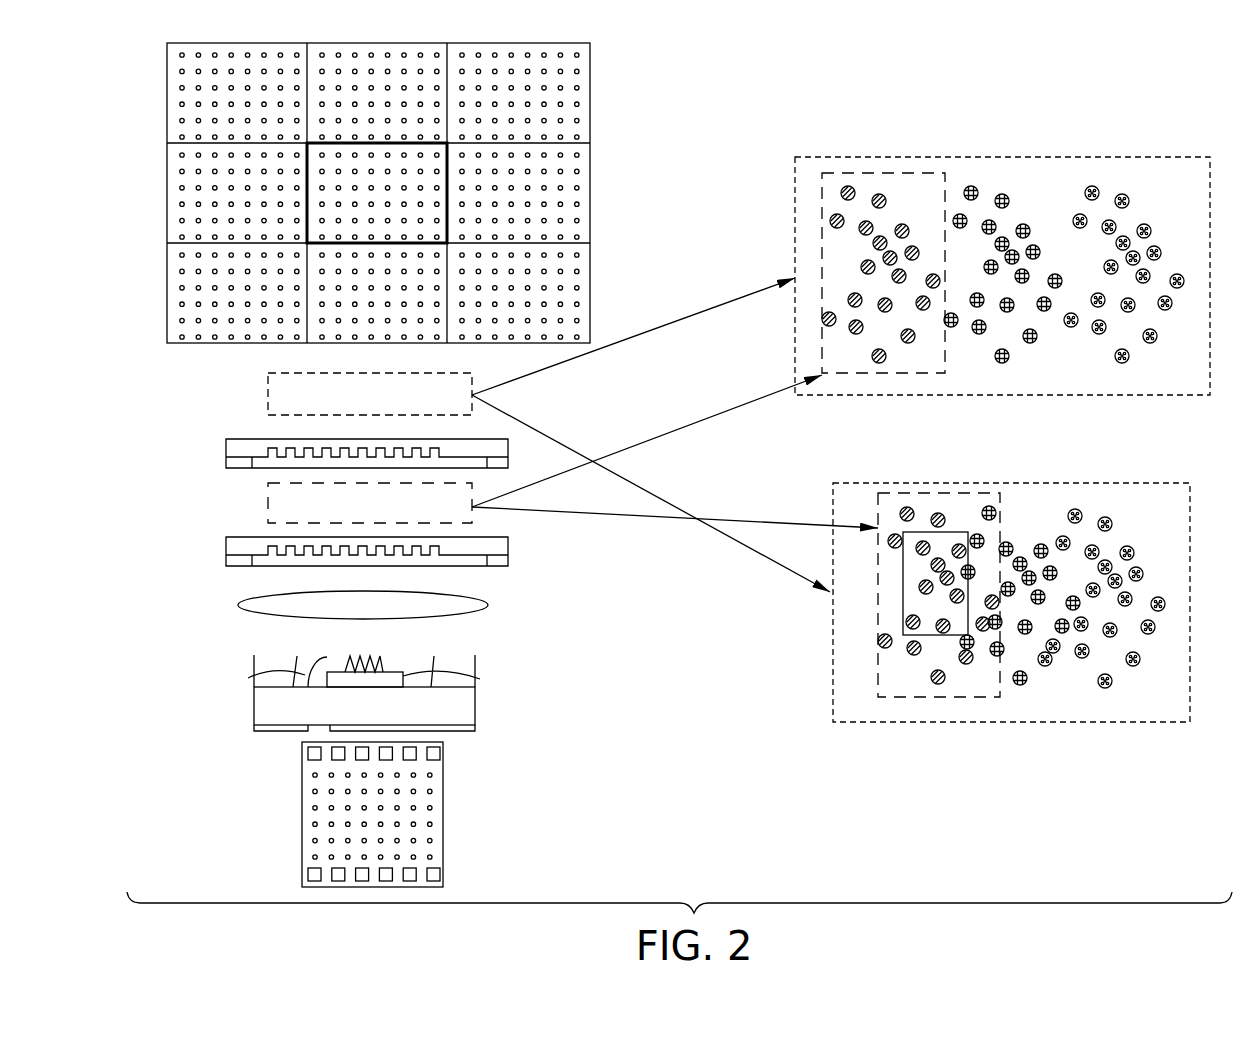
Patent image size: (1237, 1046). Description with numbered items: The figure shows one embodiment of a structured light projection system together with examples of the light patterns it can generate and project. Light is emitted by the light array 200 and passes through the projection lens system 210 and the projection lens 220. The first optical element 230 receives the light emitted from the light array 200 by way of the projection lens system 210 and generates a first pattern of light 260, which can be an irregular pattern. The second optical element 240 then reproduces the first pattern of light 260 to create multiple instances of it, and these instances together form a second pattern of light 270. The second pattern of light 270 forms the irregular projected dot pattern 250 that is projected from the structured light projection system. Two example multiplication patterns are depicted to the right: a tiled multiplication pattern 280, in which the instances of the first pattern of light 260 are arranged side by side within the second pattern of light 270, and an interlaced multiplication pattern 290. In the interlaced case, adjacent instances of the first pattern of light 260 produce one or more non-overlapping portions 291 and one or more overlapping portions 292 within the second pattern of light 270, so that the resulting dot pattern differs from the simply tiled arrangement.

The light array 200 is at (302, 812).
The projection lens system 210 is at (254, 697).
The projection lens 220 is at (242, 603).
The first optical element 230 is at (226, 541).
The second optical element 240 is at (226, 443).
The irregular projected dot pattern 250 is at (168, 185).
The first pattern of light 260 is at (383, 515).
The second pattern of light 270 is at (383, 405).
The tiled multiplication pattern 280 is at (1021, 135).
The interlaced multiplication pattern 290 is at (1021, 459).
The non-overlapping portion 291 is at (903, 598).
The overlapping portion 292 is at (930, 665).